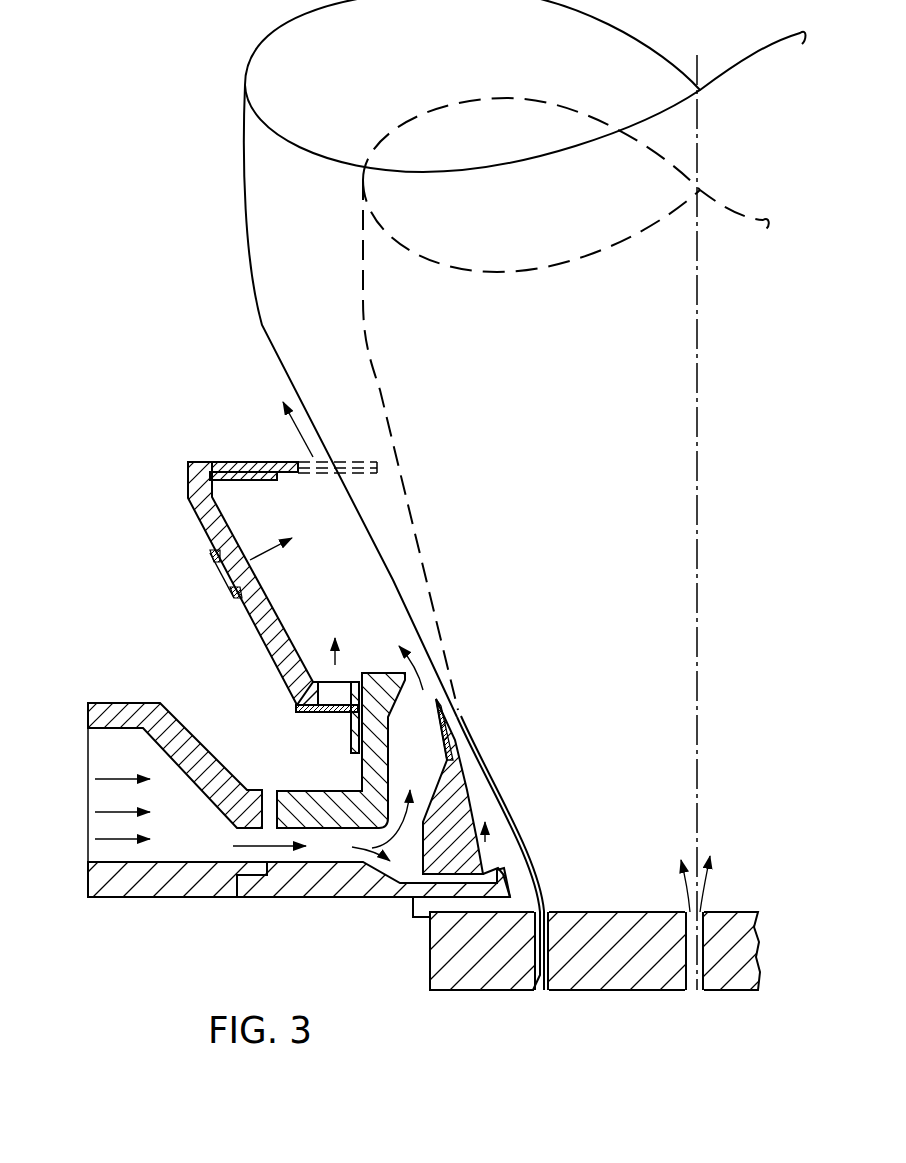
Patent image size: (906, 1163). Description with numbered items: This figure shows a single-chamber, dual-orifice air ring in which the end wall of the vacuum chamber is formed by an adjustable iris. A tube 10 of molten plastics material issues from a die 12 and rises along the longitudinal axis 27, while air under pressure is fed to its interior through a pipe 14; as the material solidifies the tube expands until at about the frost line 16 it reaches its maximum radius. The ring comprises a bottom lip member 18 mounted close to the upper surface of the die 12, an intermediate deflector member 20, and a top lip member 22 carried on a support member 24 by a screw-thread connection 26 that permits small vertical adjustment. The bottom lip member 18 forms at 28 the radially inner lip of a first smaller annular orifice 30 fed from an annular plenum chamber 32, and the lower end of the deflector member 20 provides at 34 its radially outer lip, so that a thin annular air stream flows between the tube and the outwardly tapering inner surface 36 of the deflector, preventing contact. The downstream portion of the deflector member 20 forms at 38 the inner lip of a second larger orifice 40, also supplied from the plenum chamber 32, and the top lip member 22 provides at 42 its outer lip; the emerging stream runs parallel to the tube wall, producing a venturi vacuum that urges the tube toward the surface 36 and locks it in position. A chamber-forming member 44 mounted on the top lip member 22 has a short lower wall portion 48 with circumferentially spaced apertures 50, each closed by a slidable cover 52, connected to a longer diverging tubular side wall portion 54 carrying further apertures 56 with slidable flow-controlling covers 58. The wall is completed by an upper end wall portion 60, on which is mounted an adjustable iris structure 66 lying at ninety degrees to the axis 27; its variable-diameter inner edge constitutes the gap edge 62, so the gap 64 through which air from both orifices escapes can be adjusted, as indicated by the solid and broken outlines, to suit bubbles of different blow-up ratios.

The tube 10 is at (367, 530).
The die 12 is at (455, 979).
The pipe 14 is at (700, 912).
The frost line 16 is at (517, 170).
The bottom lip member 18 is at (300, 897).
The intermediate deflector member 20 is at (450, 787).
The top lip member 22 is at (330, 800).
The support member 24 is at (207, 757).
The screw-thread connection 26 is at (268, 790).
The longitudinal axis 27 is at (697, 425).
The radially inner lip of first orifice 28 is at (503, 870).
The first annular orifice 30 is at (497, 835).
The annular plenum chamber 32 is at (175, 807).
The radially outer lip of first orifice 34 is at (510, 888).
The inner surface of deflector member 36 is at (477, 810).
The radially inner lip of second orifice 38 is at (443, 697).
The second annular orifice 40 is at (428, 697).
The radially outer lip of second orifice 42 is at (418, 690).
The chamber-forming member 44 is at (176, 534).
The lower wall portion 48 is at (353, 682).
The apertures 50 is at (330, 690).
The slidable cover 52 is at (299, 714).
The tubular side wall portion 54 is at (275, 645).
The apertures 56 is at (222, 575).
The slidable flow-controlling cover 58 is at (234, 597).
The upper end wall portion 60 is at (213, 463).
The annular orifice (gap edge) 62 is at (290, 463).
The gap 64 is at (325, 462).
The adjustable iris structure 66 is at (245, 471).